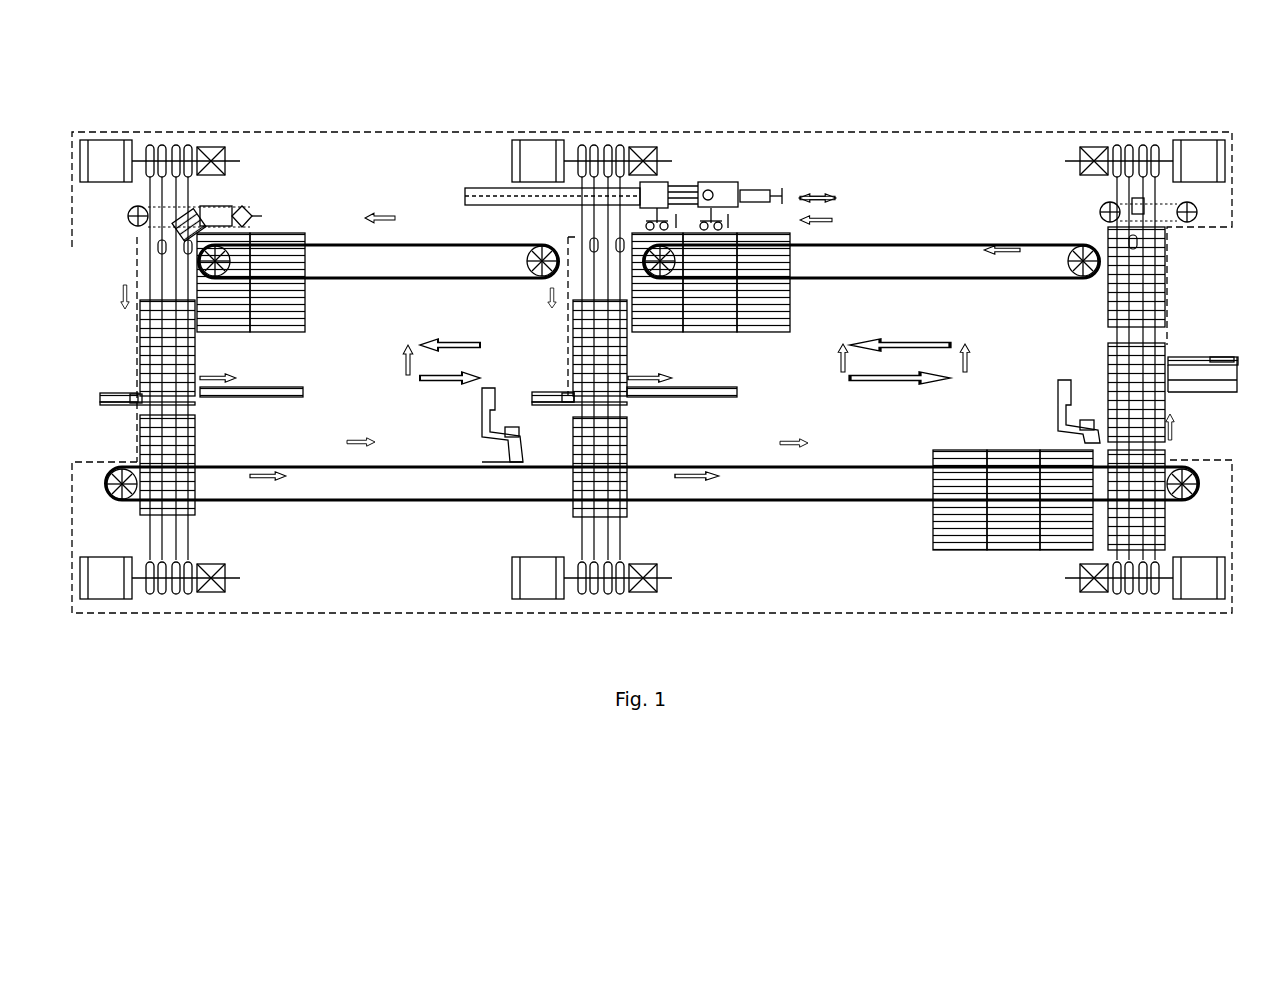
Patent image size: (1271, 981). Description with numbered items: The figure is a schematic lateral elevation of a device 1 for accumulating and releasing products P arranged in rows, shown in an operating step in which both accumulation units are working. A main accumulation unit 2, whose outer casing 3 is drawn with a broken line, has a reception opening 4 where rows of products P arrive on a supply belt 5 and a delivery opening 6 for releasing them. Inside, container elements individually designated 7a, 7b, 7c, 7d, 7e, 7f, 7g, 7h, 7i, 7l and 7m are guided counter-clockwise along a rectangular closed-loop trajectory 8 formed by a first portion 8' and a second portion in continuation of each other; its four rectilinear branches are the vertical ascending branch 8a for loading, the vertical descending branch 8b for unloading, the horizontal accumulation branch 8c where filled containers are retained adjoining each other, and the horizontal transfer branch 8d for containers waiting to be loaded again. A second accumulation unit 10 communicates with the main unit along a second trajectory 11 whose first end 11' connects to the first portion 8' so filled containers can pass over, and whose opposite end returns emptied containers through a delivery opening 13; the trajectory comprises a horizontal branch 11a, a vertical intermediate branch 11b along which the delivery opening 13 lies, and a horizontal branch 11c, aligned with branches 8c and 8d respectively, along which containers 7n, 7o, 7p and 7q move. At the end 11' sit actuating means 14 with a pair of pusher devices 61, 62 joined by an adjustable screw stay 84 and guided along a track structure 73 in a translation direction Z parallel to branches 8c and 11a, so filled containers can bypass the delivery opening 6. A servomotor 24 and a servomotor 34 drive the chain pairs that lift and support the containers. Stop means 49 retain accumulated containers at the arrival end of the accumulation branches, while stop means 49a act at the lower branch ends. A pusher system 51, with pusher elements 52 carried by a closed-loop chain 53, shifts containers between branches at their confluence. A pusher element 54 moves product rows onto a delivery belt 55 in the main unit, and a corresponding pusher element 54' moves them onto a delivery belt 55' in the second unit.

The device for accumulating and releasing products 1 is at (728, 78).
The main accumulation unit 2 is at (873, 537).
The outer containment body or casing 3 is at (287, 130).
The reception opening 4 is at (1170, 345).
The supply belt 5 is at (1205, 385).
The delivery opening 6 is at (565, 390).
The container element 7a is at (1108, 386).
The container element 7b is at (1165, 506).
The container element 7c is at (1067, 552).
The container element 7d is at (1013, 552).
The container element 7e is at (960, 553).
The container element 7f is at (627, 456).
The container element 7g is at (570, 347).
The container element 7h is at (663, 332).
The container element 7i is at (707, 332).
The container element 7l is at (763, 332).
The container element 7m is at (1108, 303).
The container element 7n is at (286, 332).
The container element 7o is at (237, 332).
The container element 7p is at (140, 336).
The container element 7q is at (140, 446).
The closed-loop trajectory 8 is at (847, 337).
The first trajectory portion 8' is at (916, 190).
The ascending branch 8a is at (1178, 305).
The descending branch 8b is at (567, 325).
The accumulation branch 8c is at (933, 237).
The transfer branch 8d is at (785, 505).
The second accumulation unit 10 is at (393, 562).
The second trajectory 11 is at (365, 346).
The first end 11' is at (499, 229).
The branch 11a is at (405, 237).
The intermediate branch 11b is at (127, 272).
The branch 11c is at (343, 505).
The delivery opening 13 is at (135, 392).
The actuating means 14 is at (738, 160).
The servomotor 24 is at (540, 138).
The servomotor 34 is at (545, 597).
The stop means 49 is at (214, 210).
The stop means 49a is at (503, 440).
The pusher system 51 is at (262, 216).
The pusher element 52 is at (173, 220).
The chain 53 is at (153, 203).
The pusher element 54 is at (682, 407).
The pusher element 54' is at (251, 408).
The delivery belt 55 is at (565, 404).
The delivery belt 55' is at (126, 413).
The pusher device 61 is at (729, 176).
The pusher device 62 is at (671, 173).
The track structure 73 is at (490, 188).
The screw stay 84 is at (724, 163).
The products P is at (125, 398).
The translation direction Z is at (803, 174).